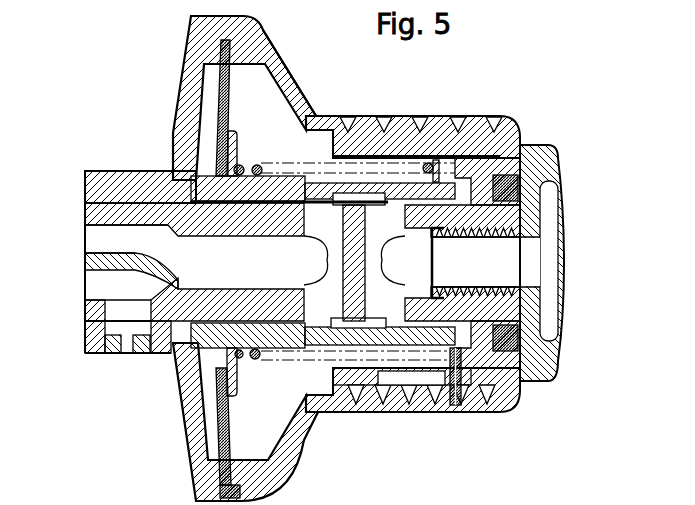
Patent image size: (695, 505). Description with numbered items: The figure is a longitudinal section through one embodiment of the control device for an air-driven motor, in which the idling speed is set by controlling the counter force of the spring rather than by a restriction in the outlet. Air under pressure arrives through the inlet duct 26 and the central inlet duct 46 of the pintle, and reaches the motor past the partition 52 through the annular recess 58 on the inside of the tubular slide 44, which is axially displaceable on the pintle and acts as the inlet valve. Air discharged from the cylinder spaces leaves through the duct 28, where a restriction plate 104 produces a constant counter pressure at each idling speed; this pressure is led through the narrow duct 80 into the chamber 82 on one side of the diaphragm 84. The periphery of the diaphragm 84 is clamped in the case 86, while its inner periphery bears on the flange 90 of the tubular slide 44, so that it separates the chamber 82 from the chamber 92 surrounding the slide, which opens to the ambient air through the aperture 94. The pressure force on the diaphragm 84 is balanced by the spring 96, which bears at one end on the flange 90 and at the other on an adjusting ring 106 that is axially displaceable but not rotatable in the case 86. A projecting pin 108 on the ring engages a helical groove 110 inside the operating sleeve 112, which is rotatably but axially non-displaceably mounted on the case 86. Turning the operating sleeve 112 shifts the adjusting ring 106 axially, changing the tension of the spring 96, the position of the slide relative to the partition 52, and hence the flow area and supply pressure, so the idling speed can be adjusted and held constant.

The inlet duct 26 is at (90, 230).
The duct 28 is at (90, 278).
The tubular slide 44 is at (296, 337).
The central inlet duct 46 is at (245, 262).
The partition 52 is at (333, 278).
The annular recess 58 is at (368, 190).
The narrow duct 80 is at (160, 345).
The chamber 82 is at (200, 110).
The diaphragm 84 is at (232, 92).
The case 86 is at (323, 108).
The flange 90 is at (231, 352).
The chamber 92 is at (288, 70).
The aperture 94 is at (290, 430).
The spring 96 is at (248, 156).
The restriction plate 104 is at (103, 345).
The adjusting ring 106 is at (458, 150).
The projecting pin 108 is at (455, 404).
The helical groove 110 is at (443, 404).
The operating sleeve 112 is at (505, 392).